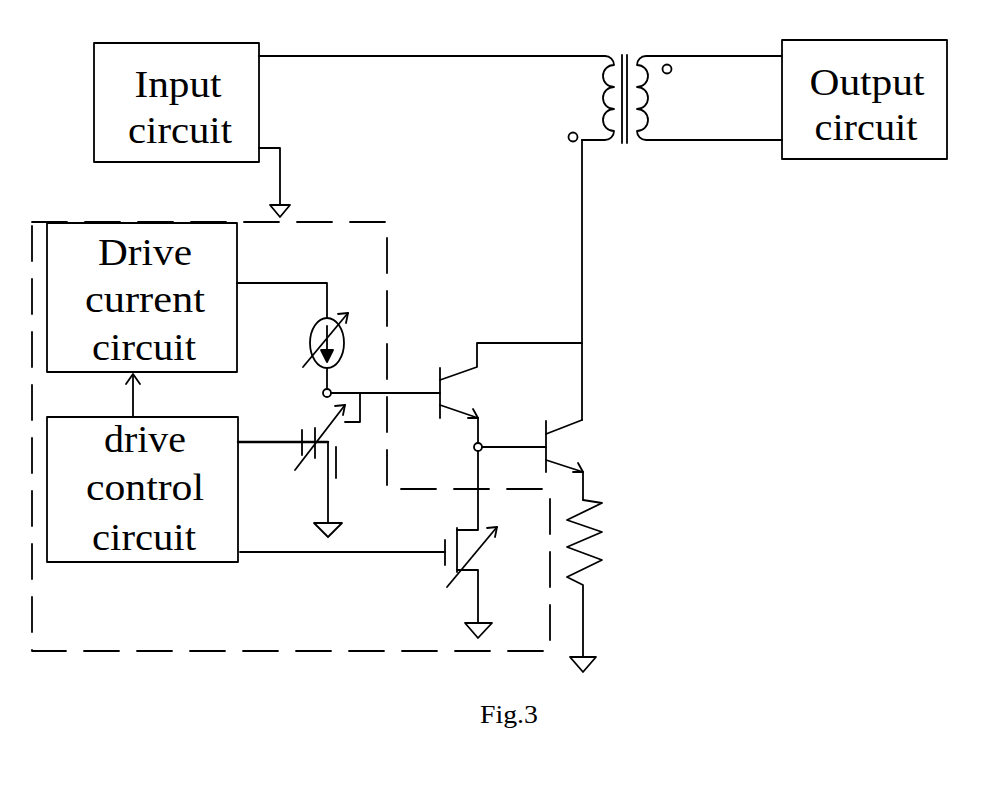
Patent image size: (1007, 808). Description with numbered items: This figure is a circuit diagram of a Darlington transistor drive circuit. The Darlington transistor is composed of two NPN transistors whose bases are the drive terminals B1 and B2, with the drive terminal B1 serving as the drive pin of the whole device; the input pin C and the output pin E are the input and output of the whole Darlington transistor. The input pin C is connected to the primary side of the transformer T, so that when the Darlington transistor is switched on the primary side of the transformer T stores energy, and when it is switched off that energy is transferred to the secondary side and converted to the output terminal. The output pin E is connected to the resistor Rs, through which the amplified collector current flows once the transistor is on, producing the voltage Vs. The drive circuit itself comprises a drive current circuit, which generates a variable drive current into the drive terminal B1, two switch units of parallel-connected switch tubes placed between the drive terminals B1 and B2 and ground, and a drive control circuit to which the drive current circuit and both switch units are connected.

The transformer T is at (676, 78).
The input pin C is at (599, 280).
The output pin E is at (599, 487).
The drive terminal B1 is at (493, 397).
The drive terminal B2 is at (545, 442).
The resistor Rs is at (620, 586).